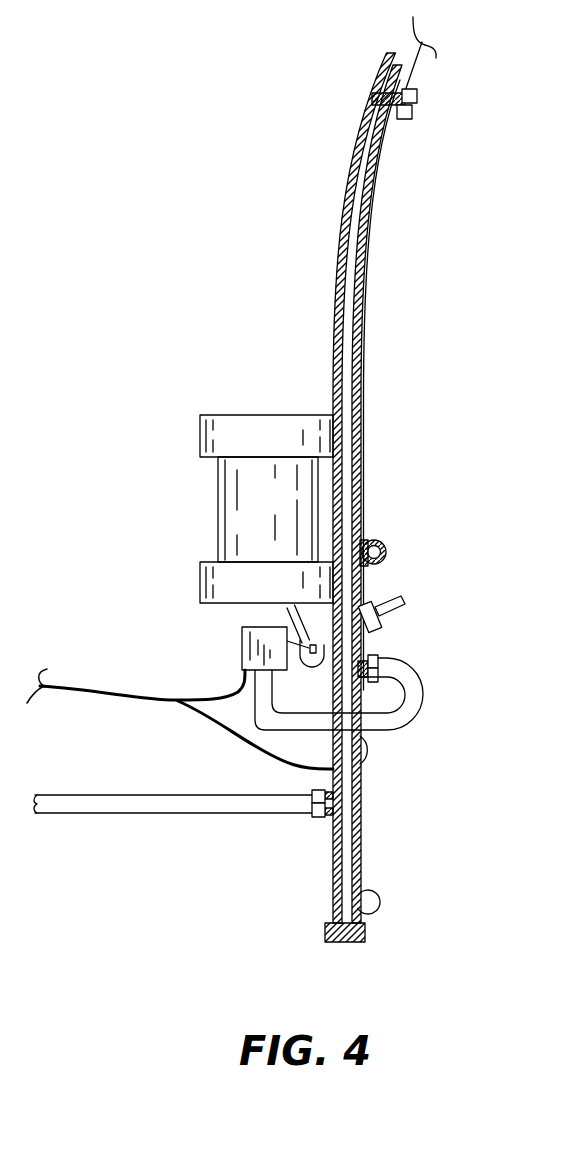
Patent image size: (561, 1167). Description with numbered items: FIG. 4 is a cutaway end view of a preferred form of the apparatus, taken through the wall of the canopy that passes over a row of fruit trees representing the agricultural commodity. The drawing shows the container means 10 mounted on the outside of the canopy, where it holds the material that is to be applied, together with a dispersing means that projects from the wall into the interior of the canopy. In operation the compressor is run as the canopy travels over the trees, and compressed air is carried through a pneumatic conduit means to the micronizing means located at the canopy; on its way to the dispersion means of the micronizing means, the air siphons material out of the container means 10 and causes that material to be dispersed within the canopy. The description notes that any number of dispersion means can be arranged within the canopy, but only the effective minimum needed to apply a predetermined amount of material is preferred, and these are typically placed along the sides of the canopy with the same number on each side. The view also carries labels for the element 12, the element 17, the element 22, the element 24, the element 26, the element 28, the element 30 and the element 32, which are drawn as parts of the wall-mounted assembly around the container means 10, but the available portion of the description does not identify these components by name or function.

The container means 10 is at (200, 430).
The air inlet fitting 12 is at (403, 597).
The cable 17 is at (87, 690).
The control valve box 22 is at (242, 641).
The support bar 24 is at (138, 815).
The mounting rail 26 is at (343, 847).
The air hose 28 is at (263, 713).
The piston rod 30 is at (282, 612).
The clamp bolt 32 is at (413, 114).